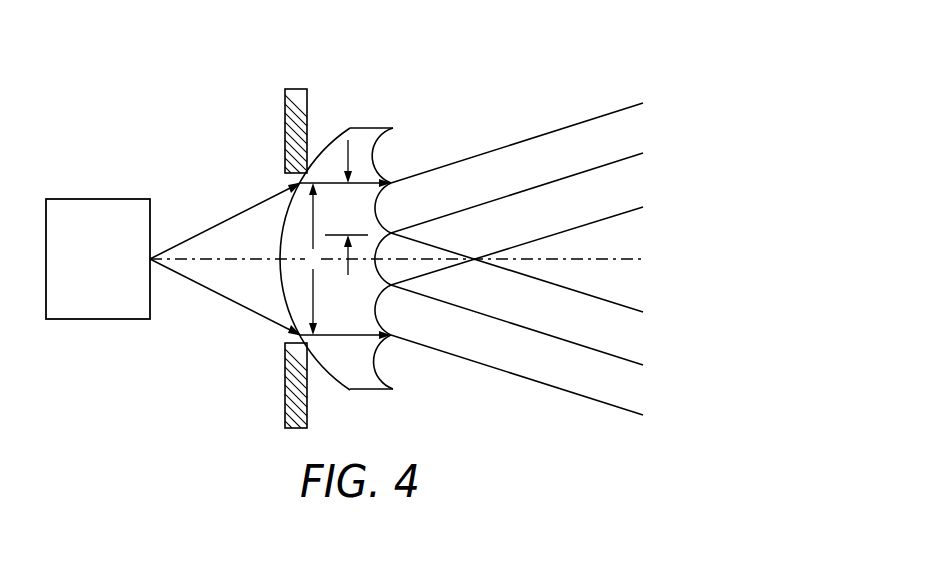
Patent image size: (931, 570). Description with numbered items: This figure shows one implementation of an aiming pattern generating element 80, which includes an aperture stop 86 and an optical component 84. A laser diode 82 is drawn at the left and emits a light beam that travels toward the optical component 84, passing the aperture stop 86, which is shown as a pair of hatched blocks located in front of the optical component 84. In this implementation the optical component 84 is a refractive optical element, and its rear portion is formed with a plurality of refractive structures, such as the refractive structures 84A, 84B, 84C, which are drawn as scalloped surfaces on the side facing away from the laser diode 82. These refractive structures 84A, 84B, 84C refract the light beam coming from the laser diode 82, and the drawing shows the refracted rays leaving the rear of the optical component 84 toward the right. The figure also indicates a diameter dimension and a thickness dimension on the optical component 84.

The aiming pattern generating element 80 is at (418, 57).
The laser diode 82 is at (134, 198).
The optical component 84 is at (383, 127).
The refractive structure 84A is at (377, 206).
The refractive structure 84B is at (383, 249).
The refractive structure 84C is at (378, 309).
The aperture stop 86 is at (285, 112).